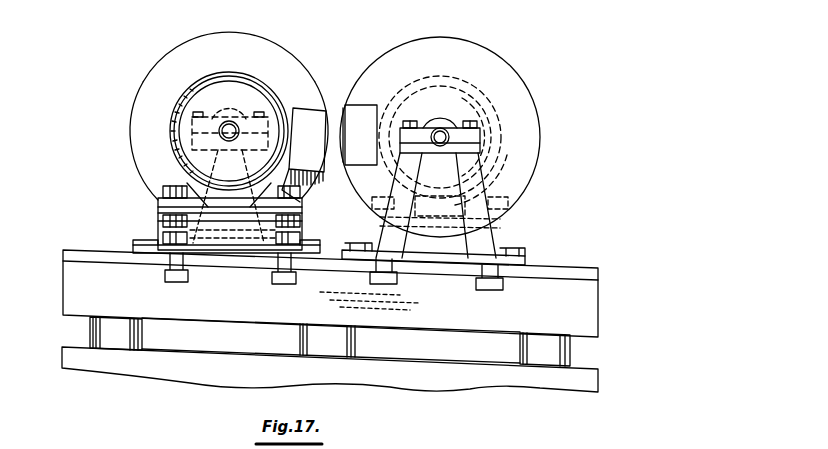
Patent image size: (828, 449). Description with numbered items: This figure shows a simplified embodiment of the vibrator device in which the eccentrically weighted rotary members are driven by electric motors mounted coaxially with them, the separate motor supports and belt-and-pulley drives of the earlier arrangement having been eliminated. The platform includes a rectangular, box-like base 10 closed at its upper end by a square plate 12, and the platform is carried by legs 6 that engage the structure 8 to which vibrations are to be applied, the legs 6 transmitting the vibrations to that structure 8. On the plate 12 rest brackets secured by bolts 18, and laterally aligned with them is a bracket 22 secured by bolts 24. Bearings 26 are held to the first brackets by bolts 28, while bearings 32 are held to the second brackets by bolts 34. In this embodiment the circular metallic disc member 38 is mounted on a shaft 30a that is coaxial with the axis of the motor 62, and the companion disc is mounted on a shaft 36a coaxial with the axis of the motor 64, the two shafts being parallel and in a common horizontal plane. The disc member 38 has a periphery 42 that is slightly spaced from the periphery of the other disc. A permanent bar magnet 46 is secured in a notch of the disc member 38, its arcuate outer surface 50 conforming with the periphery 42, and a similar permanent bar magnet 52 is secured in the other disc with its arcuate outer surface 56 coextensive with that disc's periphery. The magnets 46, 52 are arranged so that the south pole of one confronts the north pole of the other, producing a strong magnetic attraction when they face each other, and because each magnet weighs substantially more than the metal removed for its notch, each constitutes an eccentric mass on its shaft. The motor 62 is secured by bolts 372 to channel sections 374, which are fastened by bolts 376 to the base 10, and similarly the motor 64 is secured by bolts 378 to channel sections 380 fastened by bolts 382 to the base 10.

The legs 6 is at (138, 334).
The structure 8 is at (115, 372).
The base 10 is at (424, 330).
The plate 12 is at (568, 268).
The bolts 18 is at (148, 244).
The bracket 22 is at (495, 178).
The bolts 24 is at (516, 252).
The bearings 26 is at (245, 110).
The bolts 28 is at (190, 116).
The shaft 30a is at (229, 122).
The bearings 32 is at (492, 116).
The bolts 34 is at (454, 126).
The shaft 36a is at (440, 128).
The disc member 38 is at (226, 34).
The periphery 42 is at (172, 72).
The permanent bar magnet 46 is at (312, 112).
The outer surface 50 is at (332, 168).
The permanent bar magnet 52 is at (366, 105).
The outer surface 56 is at (343, 108).
The motor 62 is at (190, 90).
The motor 64 is at (489, 98).
The bolts 372 is at (168, 188).
The channel sections 374 is at (162, 223).
The bolts 376 is at (166, 272).
The bolts 378 is at (520, 198).
The channel sections 380 is at (514, 230).
The bolts 382 is at (495, 288).